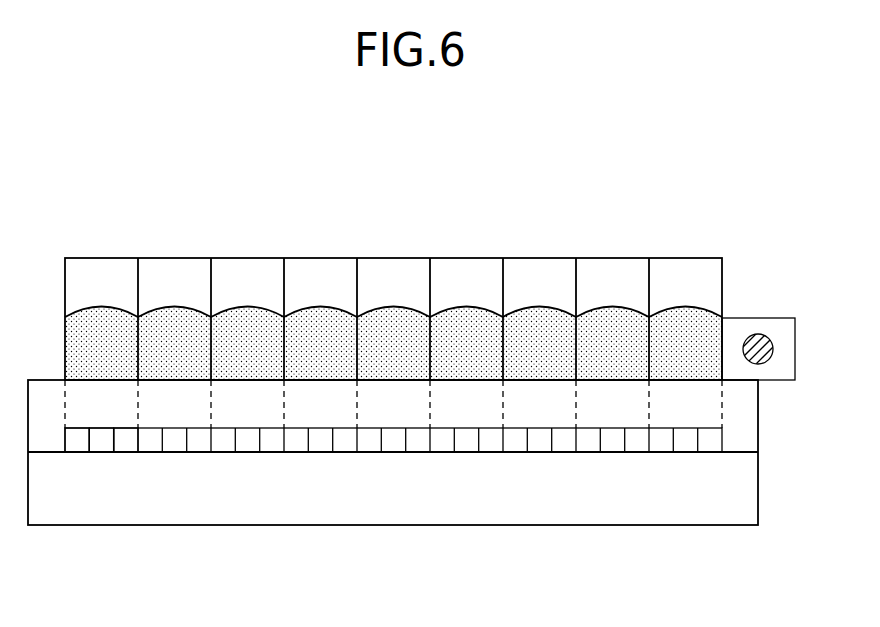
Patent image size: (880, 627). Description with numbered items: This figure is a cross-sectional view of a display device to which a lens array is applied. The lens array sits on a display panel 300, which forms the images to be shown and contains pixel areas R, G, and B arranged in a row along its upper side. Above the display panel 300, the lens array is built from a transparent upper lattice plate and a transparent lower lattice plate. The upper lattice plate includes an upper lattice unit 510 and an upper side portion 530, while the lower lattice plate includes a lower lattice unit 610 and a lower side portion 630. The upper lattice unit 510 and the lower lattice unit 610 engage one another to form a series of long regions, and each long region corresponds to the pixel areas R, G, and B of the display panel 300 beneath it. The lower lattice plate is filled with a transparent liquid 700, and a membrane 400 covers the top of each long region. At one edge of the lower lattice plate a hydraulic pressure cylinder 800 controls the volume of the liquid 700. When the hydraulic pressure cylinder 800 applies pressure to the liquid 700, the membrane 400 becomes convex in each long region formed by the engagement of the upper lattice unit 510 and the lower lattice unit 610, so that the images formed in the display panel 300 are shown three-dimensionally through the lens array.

The display panel 300 is at (760, 497).
The membrane 400 is at (372, 286).
The upper lattice unit 510 is at (577, 278).
The upper side portion 530 is at (680, 257).
The lower lattice unit 610 is at (133, 339).
The lower side portion 630 is at (93, 378).
The liquid 700 is at (463, 322).
The hydraulic pressure cylinder 800 is at (765, 362).
The red pixel area R is at (77, 441).
The green pixel area G is at (101, 441).
The blue pixel area B is at (126, 441).